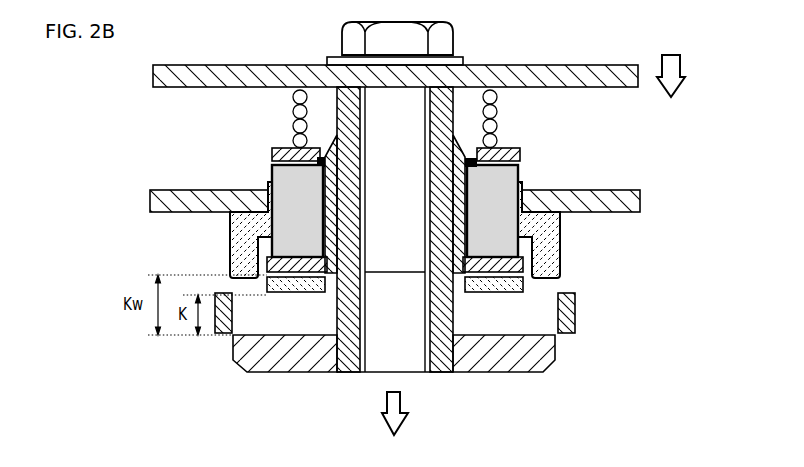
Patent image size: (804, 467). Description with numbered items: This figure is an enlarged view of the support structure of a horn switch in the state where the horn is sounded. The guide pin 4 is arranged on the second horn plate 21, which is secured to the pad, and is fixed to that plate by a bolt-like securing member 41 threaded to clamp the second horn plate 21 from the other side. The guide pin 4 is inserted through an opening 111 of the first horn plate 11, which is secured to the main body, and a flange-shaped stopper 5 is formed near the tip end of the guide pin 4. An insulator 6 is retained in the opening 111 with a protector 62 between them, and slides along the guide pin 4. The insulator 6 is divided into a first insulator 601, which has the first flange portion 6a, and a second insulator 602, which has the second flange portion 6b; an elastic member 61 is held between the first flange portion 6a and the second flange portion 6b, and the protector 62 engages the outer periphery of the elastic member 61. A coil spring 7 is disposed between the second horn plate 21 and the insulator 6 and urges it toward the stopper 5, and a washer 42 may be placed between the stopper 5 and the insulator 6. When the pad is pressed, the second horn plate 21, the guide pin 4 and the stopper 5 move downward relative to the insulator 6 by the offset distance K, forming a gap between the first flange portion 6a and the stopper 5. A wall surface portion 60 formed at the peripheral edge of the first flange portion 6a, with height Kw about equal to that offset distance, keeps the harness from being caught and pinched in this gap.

The securing member 41 is at (343, 29).
The second horn plate 21 is at (586, 88).
The coil spring 7 is at (292, 127).
The first horn plate 11 is at (174, 188).
The opening 111 is at (255, 191).
The second flange portion 6b is at (270, 152).
The protector 62 is at (229, 237).
The elastic member 61 is at (313, 222).
The second insulator 602 is at (522, 157).
The first insulator 601 is at (527, 265).
The insulator 6 is at (544, 202).
The first flange portion 6a is at (562, 257).
The washer 42 is at (492, 296).
The wall surface portion 60 is at (577, 310).
The stopper 5 is at (284, 374).
The guide pin 4 is at (400, 315).